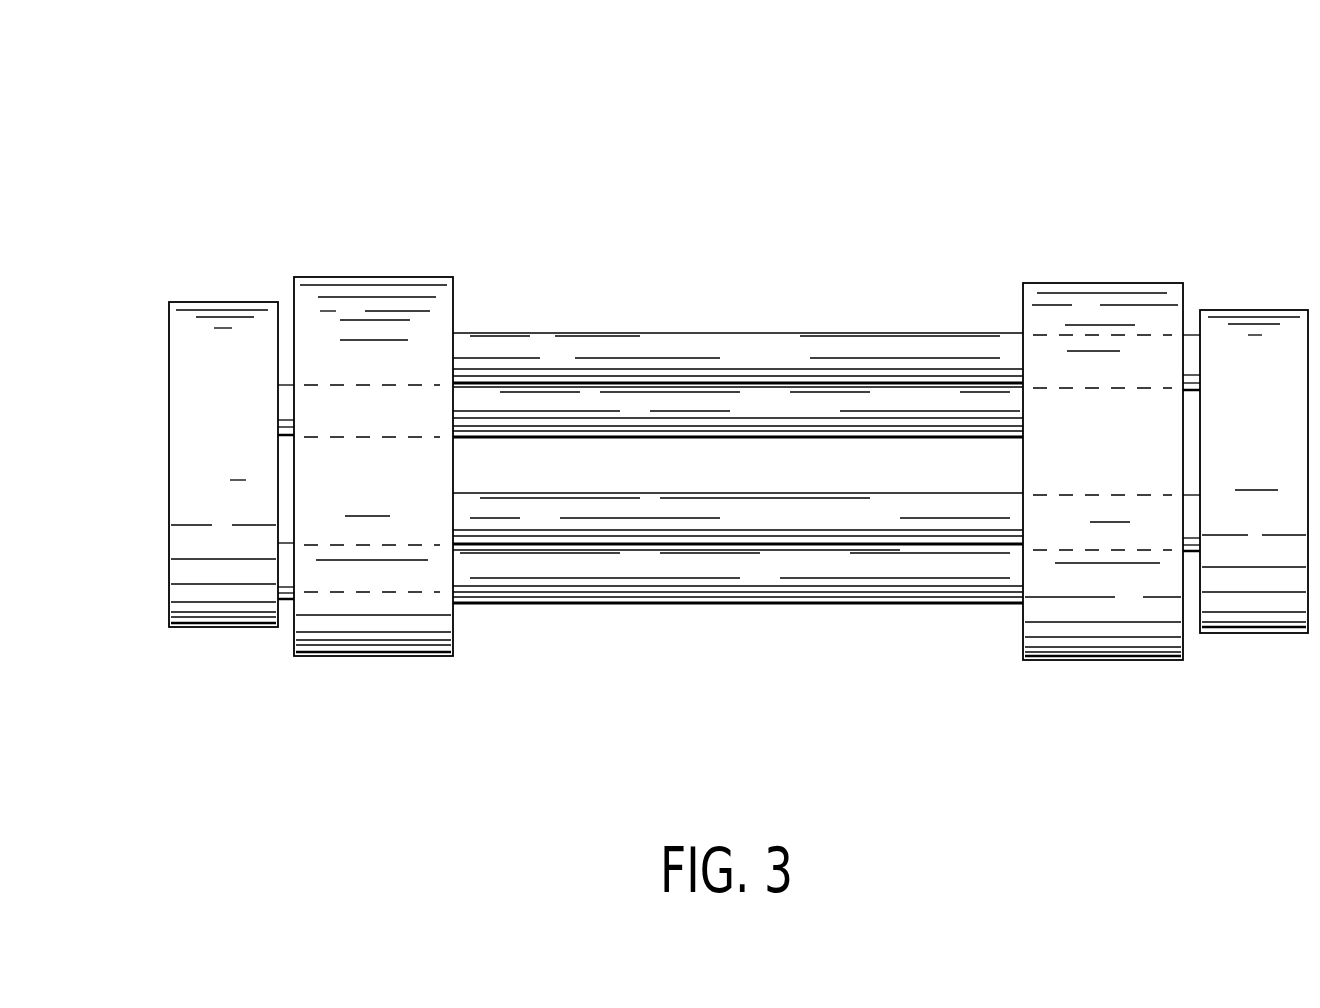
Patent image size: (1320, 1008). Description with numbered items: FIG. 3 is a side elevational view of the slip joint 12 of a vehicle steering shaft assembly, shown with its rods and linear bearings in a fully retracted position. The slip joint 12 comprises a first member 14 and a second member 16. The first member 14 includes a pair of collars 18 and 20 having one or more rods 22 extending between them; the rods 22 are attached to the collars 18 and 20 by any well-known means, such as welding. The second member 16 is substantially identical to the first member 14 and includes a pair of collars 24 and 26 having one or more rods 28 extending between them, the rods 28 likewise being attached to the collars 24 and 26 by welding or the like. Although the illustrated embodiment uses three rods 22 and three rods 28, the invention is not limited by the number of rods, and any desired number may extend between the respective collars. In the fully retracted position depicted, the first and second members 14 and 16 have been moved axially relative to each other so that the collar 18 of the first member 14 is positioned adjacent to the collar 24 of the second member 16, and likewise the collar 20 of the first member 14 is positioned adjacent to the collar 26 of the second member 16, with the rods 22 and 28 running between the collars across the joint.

The slip joint 12 is at (532, 155).
The first member 14 is at (218, 275).
The second member 16 is at (1265, 245).
The collar 18 is at (226, 630).
The collar 20 is at (1067, 662).
The rods 22 is at (287, 385).
The collar 24 is at (375, 657).
The collar 26 is at (1278, 640).
The rods 28 is at (641, 350).